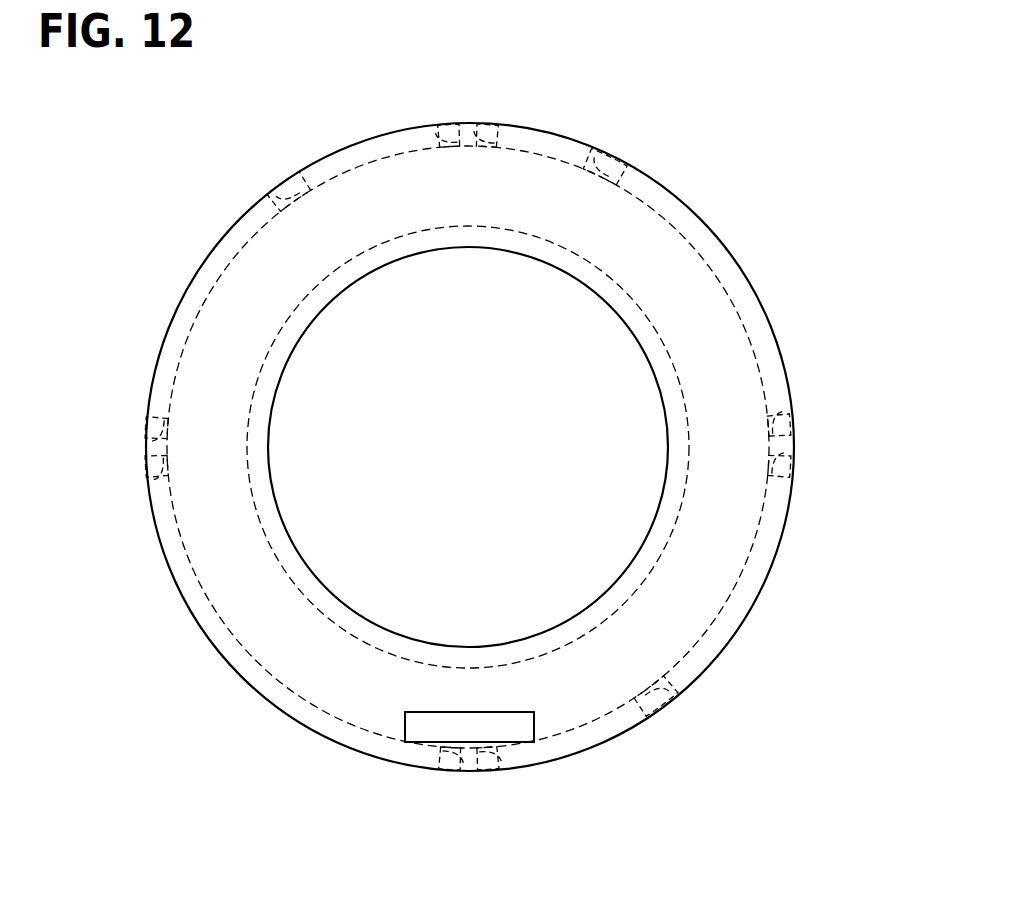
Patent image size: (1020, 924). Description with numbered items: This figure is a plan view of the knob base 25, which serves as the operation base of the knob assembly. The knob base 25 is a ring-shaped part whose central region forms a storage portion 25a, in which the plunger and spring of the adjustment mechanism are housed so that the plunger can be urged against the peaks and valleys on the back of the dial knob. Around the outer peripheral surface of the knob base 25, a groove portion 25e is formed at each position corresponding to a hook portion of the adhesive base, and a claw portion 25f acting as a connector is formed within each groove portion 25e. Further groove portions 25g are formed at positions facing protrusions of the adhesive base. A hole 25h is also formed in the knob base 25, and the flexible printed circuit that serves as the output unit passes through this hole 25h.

The knob base 25 is at (753, 283).
The storage portion 25a is at (553, 265).
The groove portion 25e is at (488, 124).
The claw portion 25f is at (446, 124).
The groove portion 25g is at (284, 182).
The hole 25h is at (433, 735).